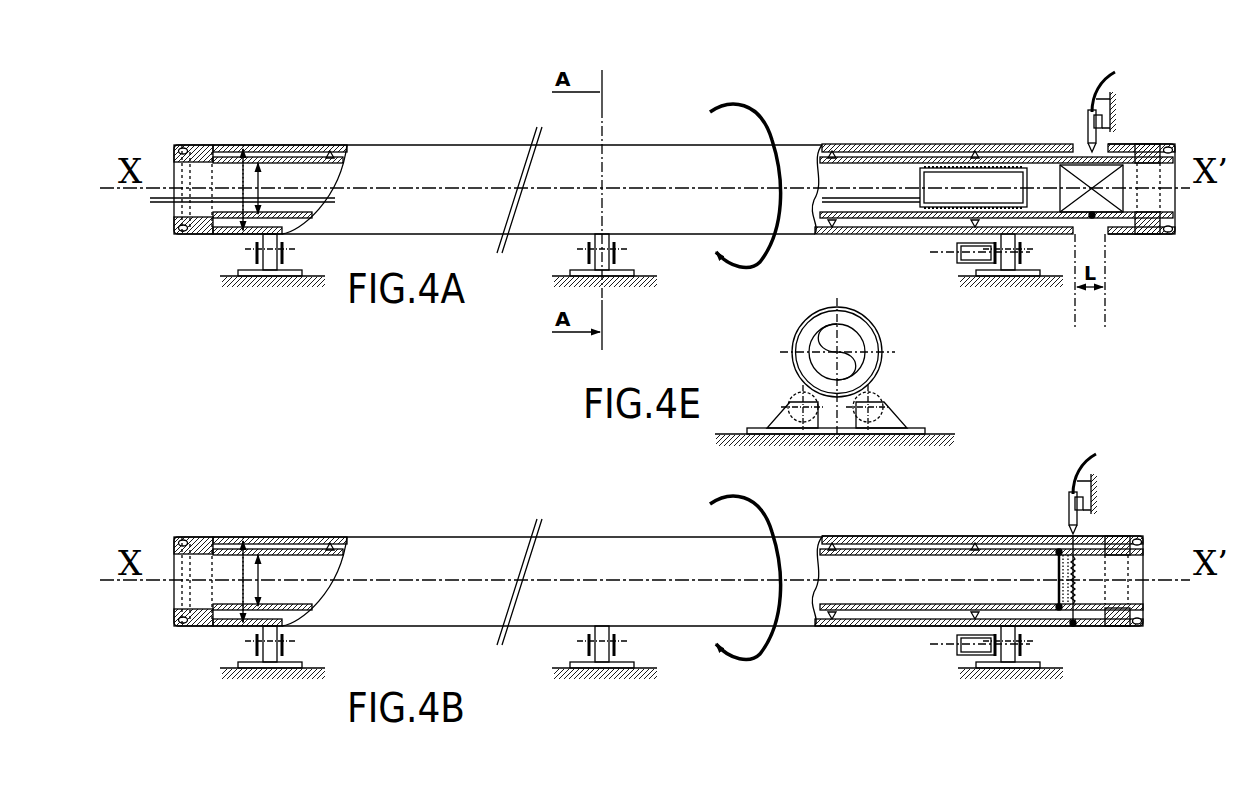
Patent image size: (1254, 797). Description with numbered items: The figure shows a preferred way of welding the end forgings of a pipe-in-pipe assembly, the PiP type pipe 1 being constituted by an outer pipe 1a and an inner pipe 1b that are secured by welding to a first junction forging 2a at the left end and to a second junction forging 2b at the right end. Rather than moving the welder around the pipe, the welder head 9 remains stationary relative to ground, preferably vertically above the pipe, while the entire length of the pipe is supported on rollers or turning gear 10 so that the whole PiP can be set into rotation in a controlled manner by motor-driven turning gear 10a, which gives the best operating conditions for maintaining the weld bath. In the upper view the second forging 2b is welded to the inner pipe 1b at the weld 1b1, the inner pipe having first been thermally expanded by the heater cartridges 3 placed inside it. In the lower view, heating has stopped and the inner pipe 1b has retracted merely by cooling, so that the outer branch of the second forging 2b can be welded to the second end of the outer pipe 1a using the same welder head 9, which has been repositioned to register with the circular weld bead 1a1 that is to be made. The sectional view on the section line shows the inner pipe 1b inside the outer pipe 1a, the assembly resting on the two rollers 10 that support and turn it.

In FIG. 4A, the PiP type pipe 1 is at (439, 130).
In FIG. 4B, the PiP type pipe 1 is at (439, 508).
In FIG. 4A, the outer pipe 1a is at (860, 147).
In FIG. 4E, the outer pipe 1a is at (812, 311).
In FIG. 4B, the outer pipe 1a is at (886, 538).
In FIG. 4A, the inner pipe 1b is at (893, 160).
In FIG. 4E, the inner pipe 1b is at (810, 352).
In FIG. 4B, the inner pipe 1b is at (921, 555).
In FIG. 4B, the circular weld bead 1a1 is at (1074, 626).
In FIG. 4A, the weld between inner pipe and second forging 1b1 is at (1092, 218).
In FIG. 4A, the first junction forging 2a is at (201, 136).
In FIG. 4B, the first junction forging 2a is at (201, 514).
In FIG. 4A, the second junction forging 2b is at (1158, 132).
In FIG. 4B, the second junction forging 2b is at (1129, 531).
In FIG. 4A, the heater cartridge 3 is at (941, 178).
In FIG. 4A, the welder head 9 is at (1088, 126).
In FIG. 4B, the welder head 9 is at (1068, 510).
In FIG. 4A, the rollers or turning gear 10 is at (276, 252).
In FIG. 4E, the rollers or turning gear 10 is at (796, 402).
In FIG. 4B, the rollers or turning gear 10 is at (276, 644).
In FIG. 4A, the motor-driven turning gear 10a is at (955, 258).
In FIG. 4B, the motor-driven turning gear 10a is at (955, 650).